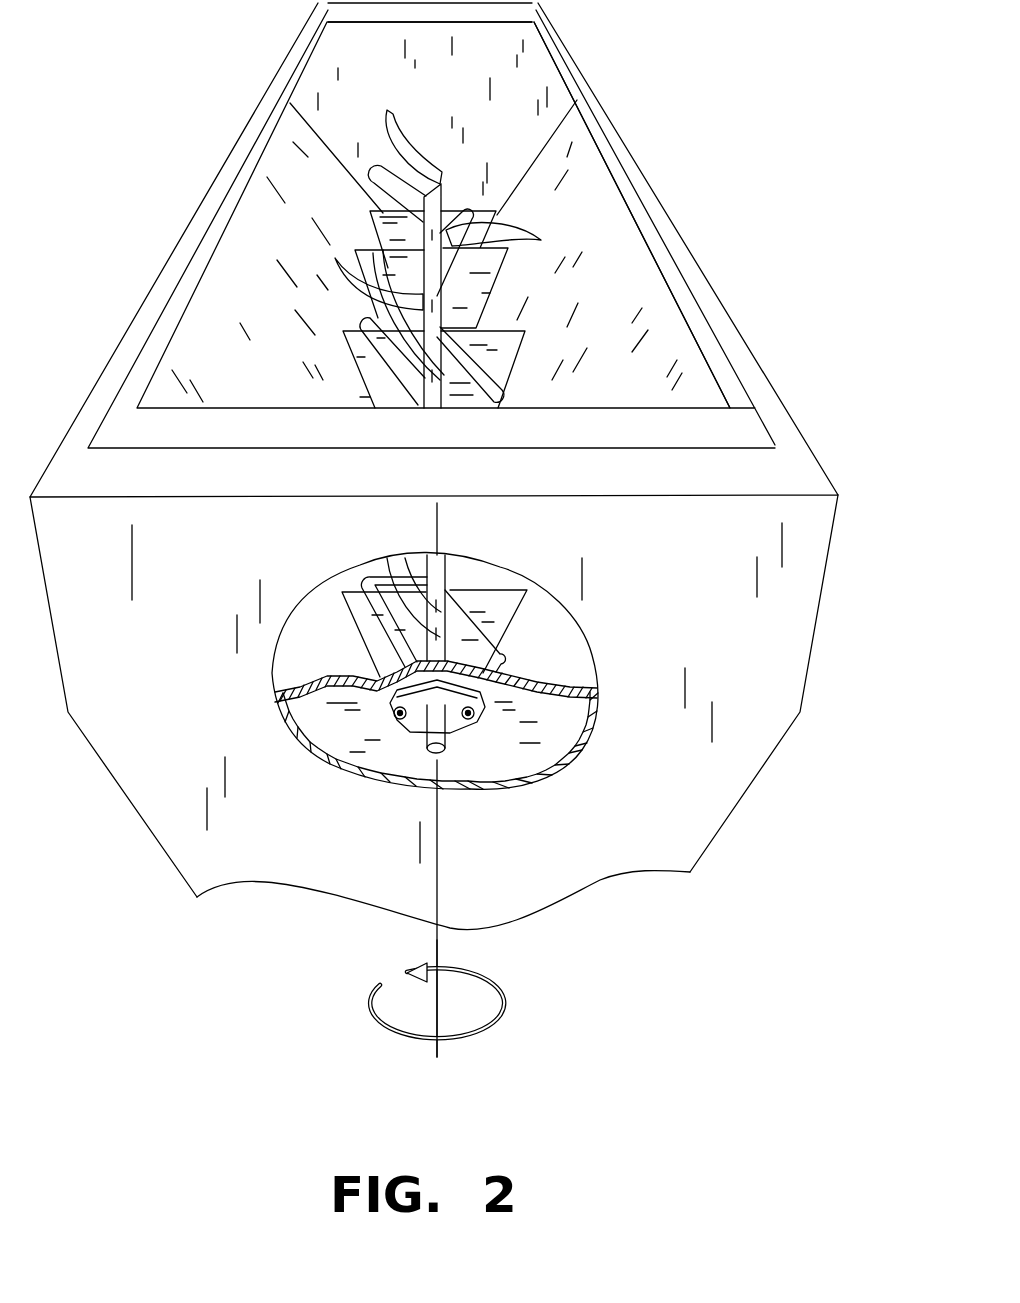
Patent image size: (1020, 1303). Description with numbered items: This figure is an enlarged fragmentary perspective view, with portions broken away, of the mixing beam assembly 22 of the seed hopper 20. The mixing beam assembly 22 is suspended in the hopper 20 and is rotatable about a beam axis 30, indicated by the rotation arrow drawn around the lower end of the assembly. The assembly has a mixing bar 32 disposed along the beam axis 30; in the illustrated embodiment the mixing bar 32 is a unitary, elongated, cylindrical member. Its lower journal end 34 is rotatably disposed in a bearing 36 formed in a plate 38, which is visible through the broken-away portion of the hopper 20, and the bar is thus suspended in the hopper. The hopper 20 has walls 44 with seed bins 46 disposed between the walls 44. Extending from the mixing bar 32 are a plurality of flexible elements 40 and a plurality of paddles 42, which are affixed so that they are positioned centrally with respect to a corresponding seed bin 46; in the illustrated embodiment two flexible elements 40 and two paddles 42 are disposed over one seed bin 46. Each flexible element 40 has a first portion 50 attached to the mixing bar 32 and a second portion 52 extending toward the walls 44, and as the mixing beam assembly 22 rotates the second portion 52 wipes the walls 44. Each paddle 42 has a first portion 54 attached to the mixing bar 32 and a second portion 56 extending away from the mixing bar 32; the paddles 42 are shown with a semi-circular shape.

The hopper 20 is at (762, 360).
The mixing beam assembly 22 is at (438, 168).
The beam axis 30 is at (440, 945).
The mixing bar 32 is at (397, 387).
The journal end 34 is at (440, 762).
The bearing 36 is at (397, 717).
The plate 38 is at (458, 727).
The flexible element 40 is at (383, 138).
The paddle 42 is at (393, 195).
The wall 44 is at (583, 173).
The seed bin 46 is at (477, 294).
The first portion 50 is at (510, 237).
The second portion 52 is at (397, 263).
The first portion 54 is at (380, 305).
The second portion 56 is at (343, 333).